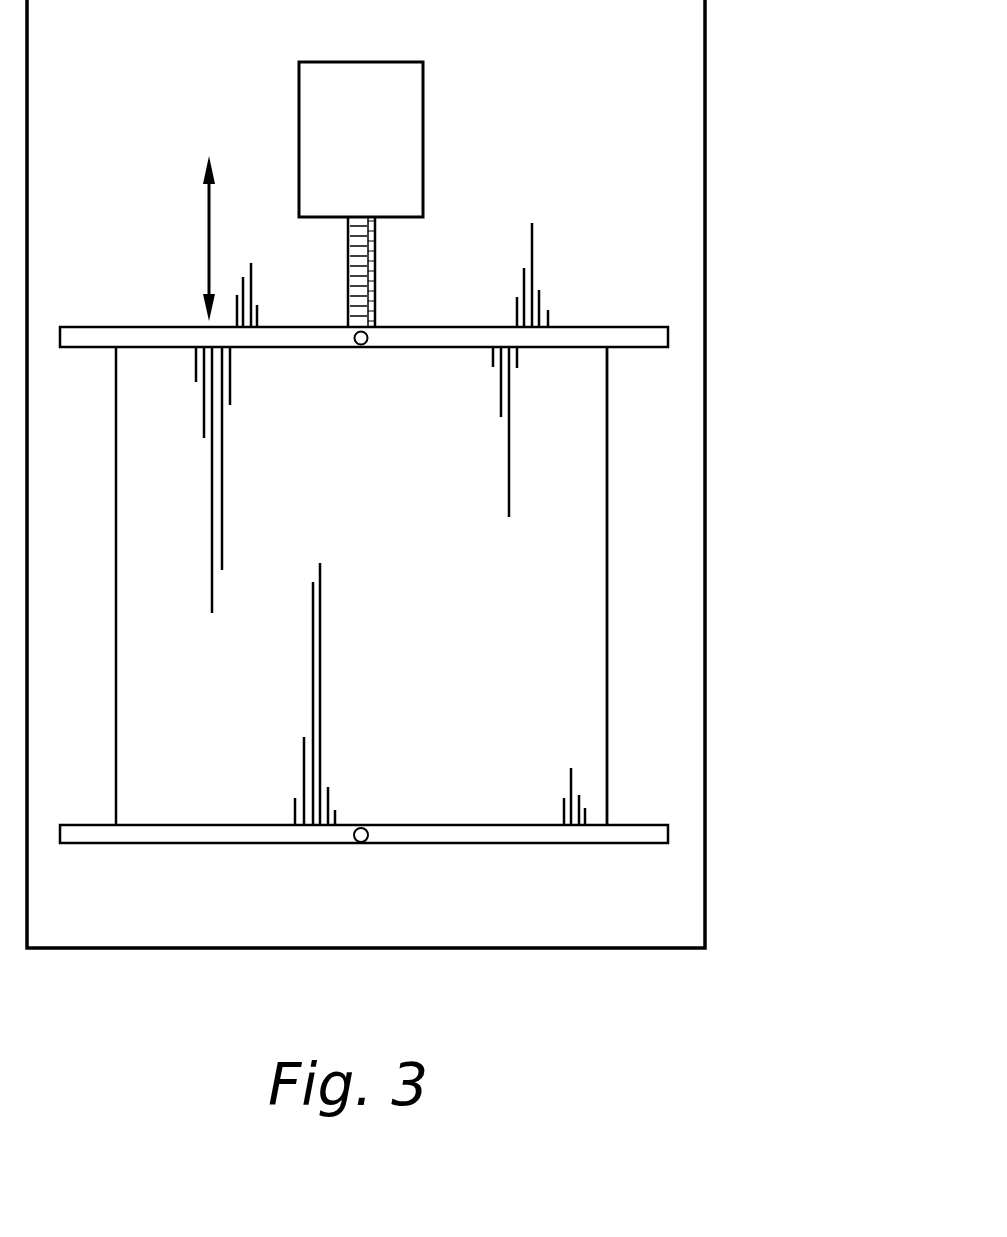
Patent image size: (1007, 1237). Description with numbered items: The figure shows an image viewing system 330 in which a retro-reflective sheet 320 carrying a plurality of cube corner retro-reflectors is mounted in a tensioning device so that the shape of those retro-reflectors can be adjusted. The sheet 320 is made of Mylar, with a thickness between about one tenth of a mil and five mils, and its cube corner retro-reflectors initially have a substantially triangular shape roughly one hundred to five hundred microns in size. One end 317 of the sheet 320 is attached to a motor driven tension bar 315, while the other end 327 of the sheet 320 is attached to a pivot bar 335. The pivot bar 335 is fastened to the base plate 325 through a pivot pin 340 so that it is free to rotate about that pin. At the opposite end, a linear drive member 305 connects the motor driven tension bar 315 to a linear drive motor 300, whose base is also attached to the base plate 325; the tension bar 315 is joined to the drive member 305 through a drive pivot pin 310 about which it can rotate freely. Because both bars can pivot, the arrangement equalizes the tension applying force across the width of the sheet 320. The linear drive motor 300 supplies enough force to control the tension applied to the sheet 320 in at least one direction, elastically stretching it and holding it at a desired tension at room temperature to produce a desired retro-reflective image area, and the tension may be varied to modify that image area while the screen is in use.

The linear drive motor 300 is at (393, 114).
The linear drive member 305 is at (376, 263).
The drive pivot pin 310 is at (368, 341).
The motor driven tension bar 315 is at (669, 336).
The one end of the sheet 317 is at (423, 367).
The sheet 320 is at (540, 557).
The base plate 325 is at (665, 580).
The other end of the sheet 327 is at (404, 805).
The image viewing system 330 is at (750, 777).
The pivot bar 335 is at (669, 834).
The pivot pin 340 is at (363, 845).